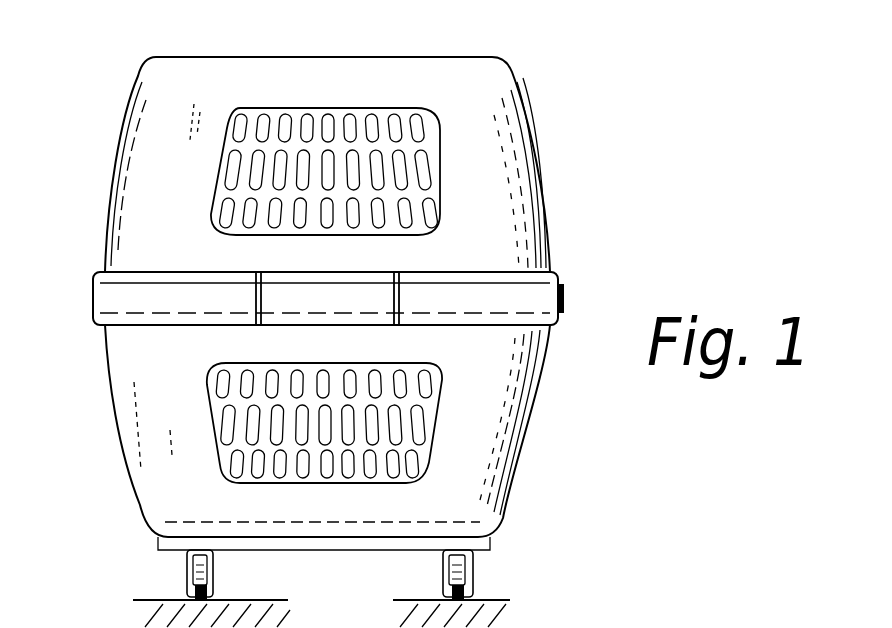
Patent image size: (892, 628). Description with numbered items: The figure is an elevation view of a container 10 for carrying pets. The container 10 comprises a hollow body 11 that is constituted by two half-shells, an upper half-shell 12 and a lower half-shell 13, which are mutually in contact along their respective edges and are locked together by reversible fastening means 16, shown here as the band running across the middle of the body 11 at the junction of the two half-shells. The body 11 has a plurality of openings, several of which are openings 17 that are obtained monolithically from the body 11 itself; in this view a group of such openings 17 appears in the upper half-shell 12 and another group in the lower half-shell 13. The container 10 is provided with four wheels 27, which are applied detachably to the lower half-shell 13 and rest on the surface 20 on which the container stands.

The container 10 is at (104, 93).
The hollow body 11 is at (97, 235).
The upper half-shell 12 is at (515, 207).
The lower half-shell 13 is at (518, 432).
The reversible fastening means 16 is at (256, 334).
The openings 17 is at (380, 152).
The floor surface 20 is at (383, 609).
The wheels 27 is at (190, 596).